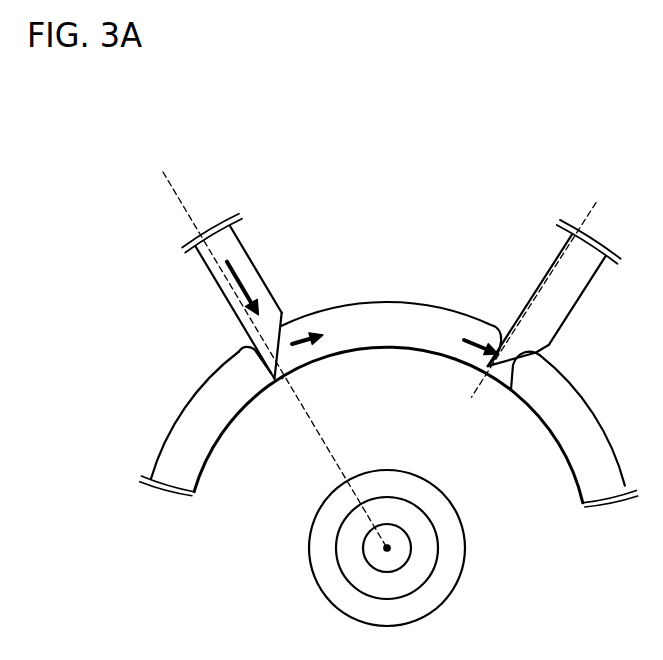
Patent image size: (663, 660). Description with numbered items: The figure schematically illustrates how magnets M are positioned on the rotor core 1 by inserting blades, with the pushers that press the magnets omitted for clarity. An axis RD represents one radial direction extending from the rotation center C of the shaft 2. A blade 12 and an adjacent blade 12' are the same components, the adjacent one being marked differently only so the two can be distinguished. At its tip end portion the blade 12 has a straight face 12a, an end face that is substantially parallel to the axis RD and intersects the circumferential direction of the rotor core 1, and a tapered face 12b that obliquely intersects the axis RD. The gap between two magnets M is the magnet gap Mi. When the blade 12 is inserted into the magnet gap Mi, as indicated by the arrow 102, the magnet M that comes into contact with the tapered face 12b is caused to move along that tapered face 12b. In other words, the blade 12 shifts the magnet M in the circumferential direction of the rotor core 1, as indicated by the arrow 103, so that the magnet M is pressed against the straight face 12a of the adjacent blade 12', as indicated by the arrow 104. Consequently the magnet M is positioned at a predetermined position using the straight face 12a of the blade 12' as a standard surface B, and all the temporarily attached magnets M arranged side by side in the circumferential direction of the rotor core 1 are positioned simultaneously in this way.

The rotor core 1 is at (230, 457).
The shaft 2 is at (430, 469).
The rotation center C is at (390, 548).
The axis RD is at (266, 350).
The standard surface B is at (537, 290).
The blade 12 is at (249, 263).
The adjacent blade 12' is at (566, 293).
The straight face 12a is at (236, 314).
The tapered face 12b is at (282, 345).
The magnet M is at (385, 302).
The arrow 102 is at (231, 269).
The arrow 103 is at (295, 338).
The arrow 104 is at (470, 338).
The magnet gap Mi is at (282, 391).